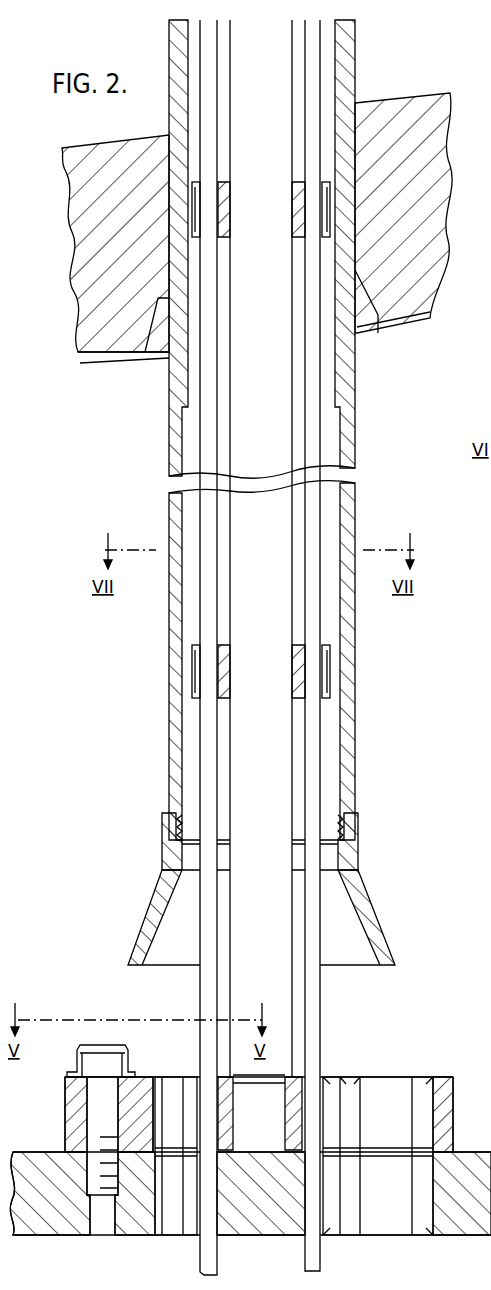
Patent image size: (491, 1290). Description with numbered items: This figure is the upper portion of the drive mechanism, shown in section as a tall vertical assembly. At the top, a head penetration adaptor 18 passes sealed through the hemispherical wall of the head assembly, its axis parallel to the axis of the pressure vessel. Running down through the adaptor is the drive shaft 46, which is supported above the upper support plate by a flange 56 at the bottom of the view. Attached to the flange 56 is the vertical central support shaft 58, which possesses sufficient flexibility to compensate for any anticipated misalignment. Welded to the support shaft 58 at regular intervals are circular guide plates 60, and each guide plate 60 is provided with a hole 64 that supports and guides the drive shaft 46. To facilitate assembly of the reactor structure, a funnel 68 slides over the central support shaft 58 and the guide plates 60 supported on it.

The head penetration adaptor 18 is at (356, 510).
The drive shaft 46 is at (205, 753).
The central support shaft 58 is at (280, 997).
The circular guide plate 60 is at (333, 215).
The hole 64 is at (328, 182).
The funnel 68 is at (378, 917).
The flange 56 is at (453, 1100).